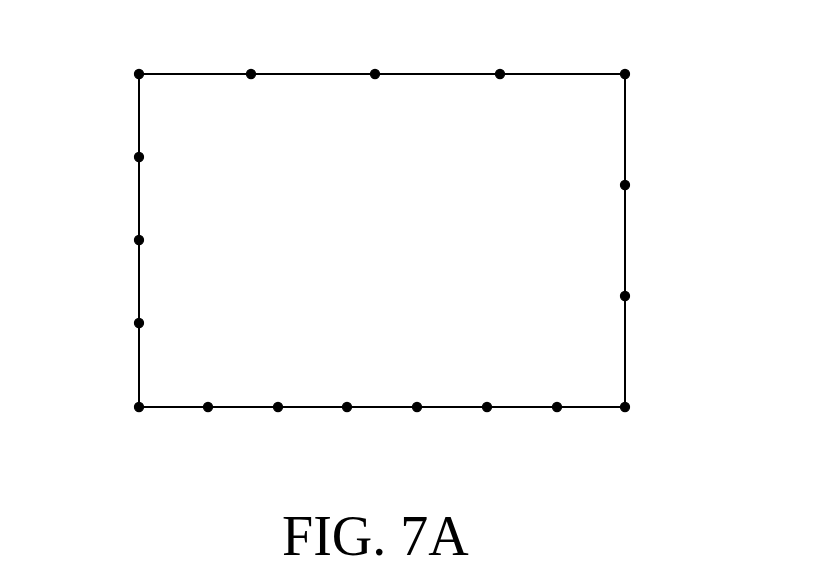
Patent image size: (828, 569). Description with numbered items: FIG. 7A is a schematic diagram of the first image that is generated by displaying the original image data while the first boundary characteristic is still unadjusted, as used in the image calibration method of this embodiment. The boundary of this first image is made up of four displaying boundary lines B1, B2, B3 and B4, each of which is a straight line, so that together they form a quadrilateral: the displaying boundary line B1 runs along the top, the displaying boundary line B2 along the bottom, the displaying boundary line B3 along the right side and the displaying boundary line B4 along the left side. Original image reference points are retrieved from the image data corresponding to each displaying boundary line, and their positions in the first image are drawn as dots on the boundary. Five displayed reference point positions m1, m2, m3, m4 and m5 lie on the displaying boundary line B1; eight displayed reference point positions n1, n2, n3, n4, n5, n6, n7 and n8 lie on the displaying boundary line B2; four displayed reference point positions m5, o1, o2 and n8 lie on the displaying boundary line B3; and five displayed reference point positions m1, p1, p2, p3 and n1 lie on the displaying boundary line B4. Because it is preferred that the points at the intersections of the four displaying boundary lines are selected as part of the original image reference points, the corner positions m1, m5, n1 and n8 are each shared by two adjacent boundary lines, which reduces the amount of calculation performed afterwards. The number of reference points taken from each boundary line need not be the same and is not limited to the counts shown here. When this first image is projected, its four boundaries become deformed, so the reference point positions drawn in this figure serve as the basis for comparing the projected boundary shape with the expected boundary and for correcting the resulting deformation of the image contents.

The displayed reference point position m1 is at (139, 74).
The displayed reference point position m2 is at (251, 74).
The displayed reference point position m3 is at (375, 74).
The displayed reference point position m4 is at (500, 74).
The displayed reference point position m5 is at (625, 74).
The displaying boundary line B1 is at (325, 74).
The displaying boundary line B2 is at (386, 407).
The displaying boundary line B3 is at (625, 242).
The displaying boundary line B4 is at (139, 200).
The displayed reference point position p1 is at (139, 157).
The displayed reference point position p2 is at (139, 240).
The displayed reference point position p3 is at (139, 323).
The displayed reference point position o1 is at (625, 185).
The displayed reference point position o2 is at (625, 296).
The displayed reference point position n1 is at (139, 407).
The displayed reference point position n2 is at (208, 407).
The displayed reference point position n3 is at (278, 407).
The displayed reference point position n4 is at (347, 407).
The displayed reference point position n5 is at (417, 407).
The displayed reference point position n6 is at (487, 407).
The displayed reference point position n7 is at (557, 407).
The displayed reference point position n8 is at (625, 407).